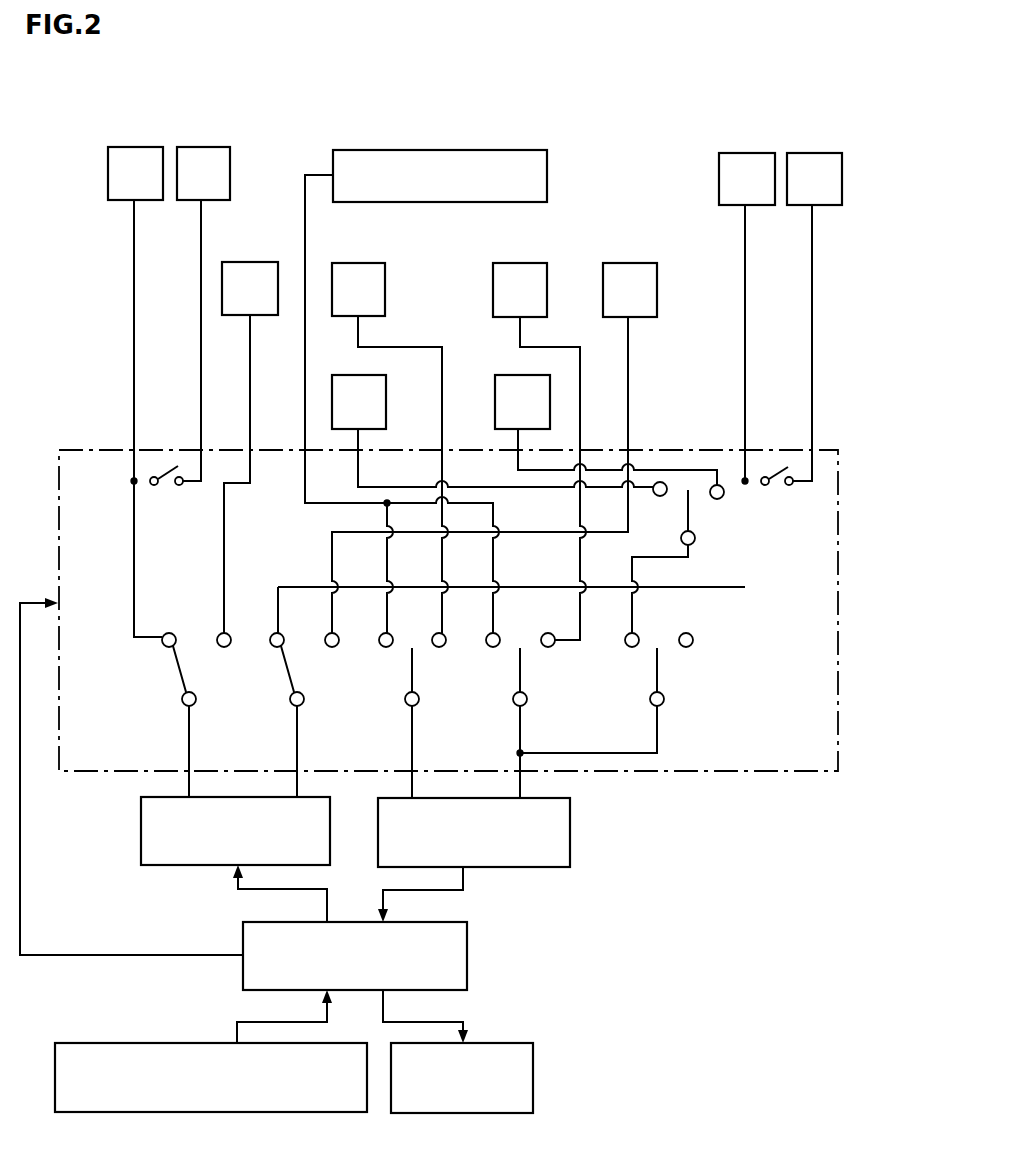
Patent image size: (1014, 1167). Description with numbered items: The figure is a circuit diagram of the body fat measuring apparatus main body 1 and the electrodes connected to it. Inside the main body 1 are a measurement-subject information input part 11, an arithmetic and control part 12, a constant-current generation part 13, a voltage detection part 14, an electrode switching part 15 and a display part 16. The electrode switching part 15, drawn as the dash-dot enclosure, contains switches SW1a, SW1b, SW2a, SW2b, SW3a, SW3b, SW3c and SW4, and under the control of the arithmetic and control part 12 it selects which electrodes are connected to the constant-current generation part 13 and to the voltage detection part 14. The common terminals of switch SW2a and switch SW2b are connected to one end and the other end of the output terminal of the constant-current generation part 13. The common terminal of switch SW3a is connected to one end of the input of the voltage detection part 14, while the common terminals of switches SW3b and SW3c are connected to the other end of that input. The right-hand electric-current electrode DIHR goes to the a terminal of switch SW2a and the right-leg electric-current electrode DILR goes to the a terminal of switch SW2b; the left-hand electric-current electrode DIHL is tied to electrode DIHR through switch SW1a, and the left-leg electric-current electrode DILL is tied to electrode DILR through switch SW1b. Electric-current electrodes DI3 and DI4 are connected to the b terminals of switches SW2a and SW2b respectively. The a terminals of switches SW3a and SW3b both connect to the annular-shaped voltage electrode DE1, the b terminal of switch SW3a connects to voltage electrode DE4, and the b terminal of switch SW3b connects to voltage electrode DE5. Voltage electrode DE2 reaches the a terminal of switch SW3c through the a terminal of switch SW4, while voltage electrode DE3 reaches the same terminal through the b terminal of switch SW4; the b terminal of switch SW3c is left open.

The body fat measuring apparatus main body 1 is at (656, 890).
The measurement-subject information input part 11 is at (55, 1073).
The arithmetic and control part 12 is at (470, 962).
The constant-current generation part 13 is at (141, 842).
The voltage detection part 14 is at (570, 853).
The electrode switching part 15 is at (693, 771).
The display part 16 is at (533, 1080).
The right-hand electric-current electrode DIHR is at (135, 145).
The left-hand electric-current electrode DIHL is at (205, 145).
The right-leg electric-current electrode DILR is at (743, 150).
The left-leg electric-current electrode DILL is at (813, 150).
The electric-current electrode DI3 is at (257, 262).
The electric-current electrode DI4 is at (658, 288).
The annular-shaped voltage electrode DE1 is at (442, 148).
The voltage electrode DE2 is at (415, 399).
The voltage electrode DE3 is at (522, 373).
The voltage electrode DE4 is at (385, 288).
The voltage electrode DE5 is at (522, 262).
The switch SW1a is at (160, 490).
The switch SW1b is at (776, 494).
The switch SW2a is at (210, 706).
The switch SW2b is at (316, 706).
The switch SW3a is at (424, 706).
The switch SW3b is at (534, 706).
The switch SW3c is at (620, 684).
The switch SW4 is at (685, 549).